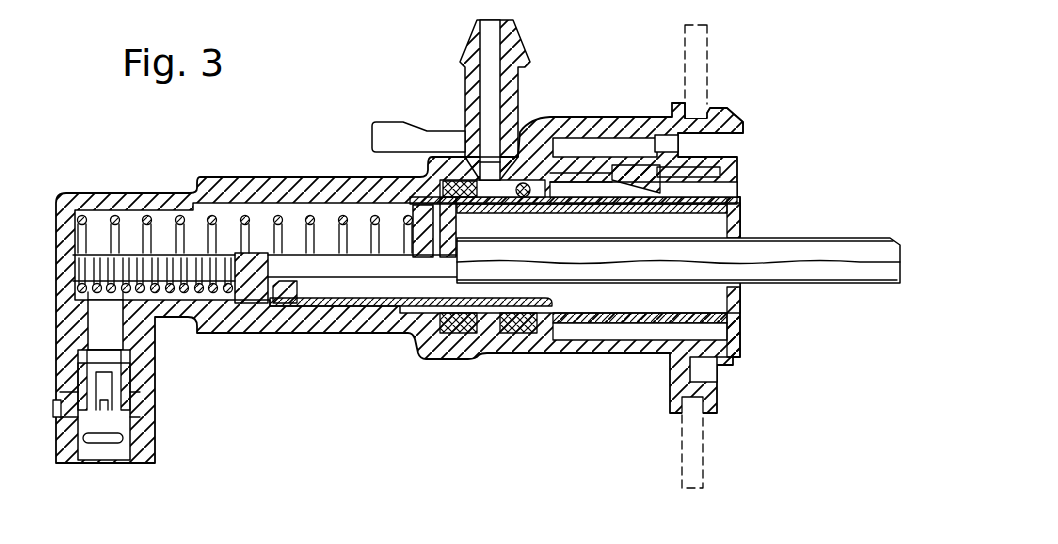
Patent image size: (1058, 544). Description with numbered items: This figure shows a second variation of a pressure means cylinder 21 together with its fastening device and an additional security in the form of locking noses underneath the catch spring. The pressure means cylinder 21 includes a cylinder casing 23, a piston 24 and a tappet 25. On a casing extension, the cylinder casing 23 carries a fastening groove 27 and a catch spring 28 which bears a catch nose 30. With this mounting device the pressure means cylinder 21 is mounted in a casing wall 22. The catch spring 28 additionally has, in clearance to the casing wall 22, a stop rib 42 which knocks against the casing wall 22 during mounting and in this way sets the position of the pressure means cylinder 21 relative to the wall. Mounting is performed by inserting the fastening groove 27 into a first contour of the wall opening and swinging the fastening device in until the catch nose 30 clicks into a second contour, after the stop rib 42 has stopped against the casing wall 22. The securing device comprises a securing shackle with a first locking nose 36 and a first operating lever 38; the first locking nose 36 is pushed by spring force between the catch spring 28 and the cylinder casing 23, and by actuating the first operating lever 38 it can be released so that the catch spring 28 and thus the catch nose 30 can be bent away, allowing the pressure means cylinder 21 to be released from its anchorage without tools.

The pressure means cylinder 21 is at (476, 250).
The casing wall 22 is at (703, 58).
The cylinder casing 23 is at (511, 355).
The piston 24 is at (333, 336).
The tappet 25 is at (838, 275).
The fastening groove 27 is at (693, 414).
The catch spring 28 is at (583, 133).
The catch nose 30 is at (743, 122).
The first locking nose 36 is at (668, 147).
The first operating lever 38 is at (392, 128).
The stop rib 42 is at (685, 106).